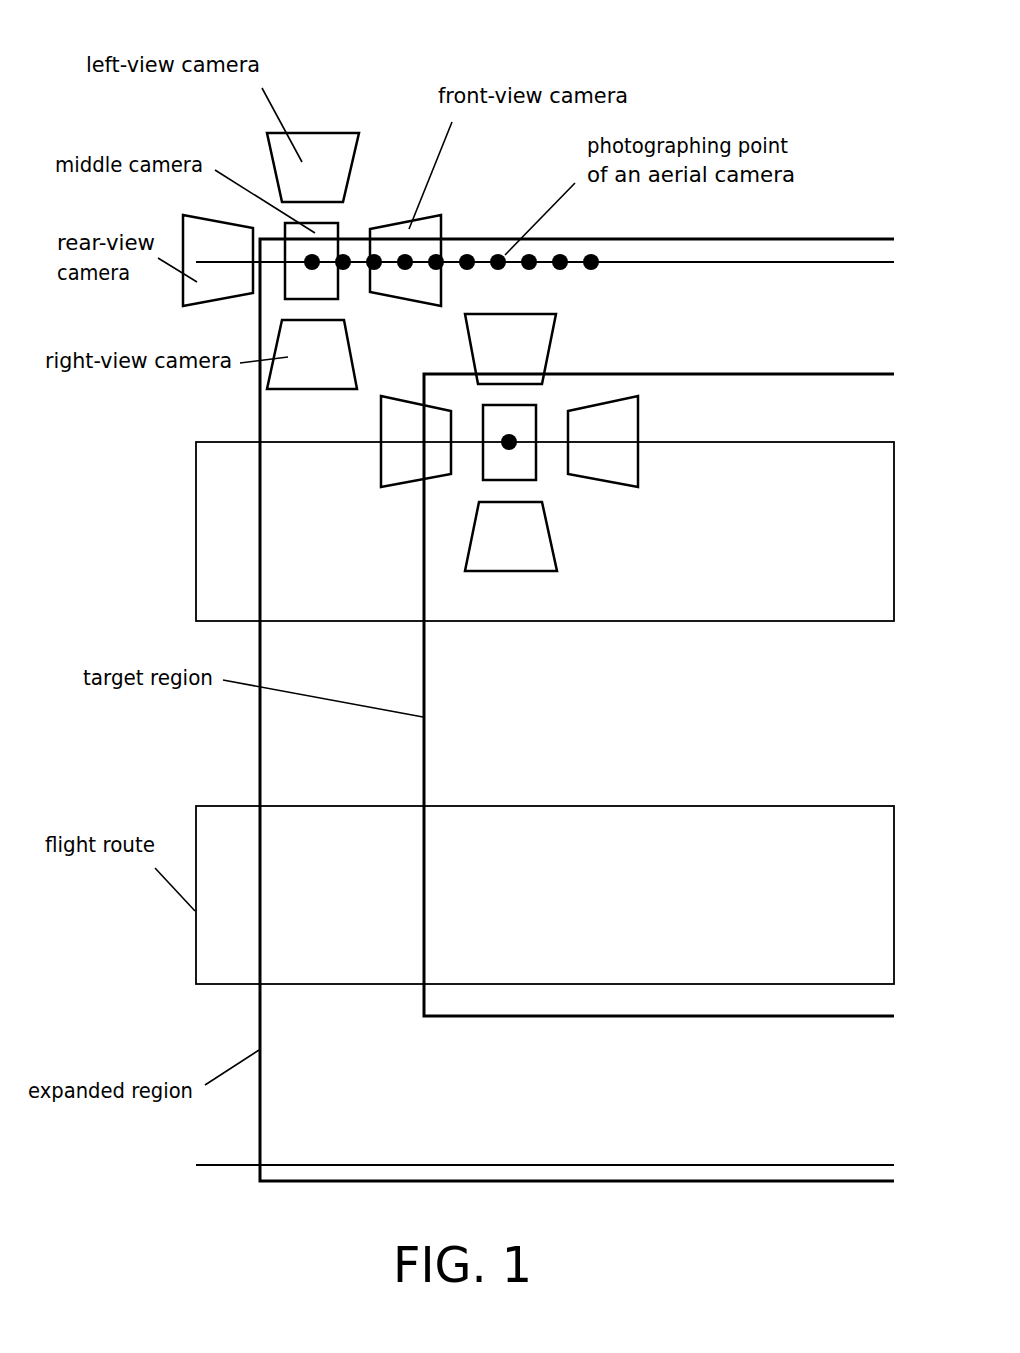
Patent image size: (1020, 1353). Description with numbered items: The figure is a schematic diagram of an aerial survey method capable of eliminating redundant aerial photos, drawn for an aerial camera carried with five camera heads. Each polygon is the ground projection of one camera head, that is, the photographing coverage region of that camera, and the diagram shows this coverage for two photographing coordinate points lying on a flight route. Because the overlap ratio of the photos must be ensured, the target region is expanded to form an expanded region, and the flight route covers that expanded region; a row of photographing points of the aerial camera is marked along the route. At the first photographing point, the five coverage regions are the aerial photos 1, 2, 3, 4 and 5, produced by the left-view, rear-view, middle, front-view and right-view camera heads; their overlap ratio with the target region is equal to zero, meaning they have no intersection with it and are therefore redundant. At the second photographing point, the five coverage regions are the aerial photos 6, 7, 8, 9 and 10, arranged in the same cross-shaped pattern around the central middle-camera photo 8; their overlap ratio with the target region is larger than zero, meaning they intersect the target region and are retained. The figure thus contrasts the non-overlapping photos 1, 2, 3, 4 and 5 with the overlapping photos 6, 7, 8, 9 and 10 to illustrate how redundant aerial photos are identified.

The aerial photo 1 is at (313, 167).
The aerial photo 2 is at (218, 260).
The aerial photo 3 is at (311, 261).
The aerial photo 4 is at (405, 260).
The aerial photo 5 is at (312, 354).
The aerial photo 6 is at (510, 349).
The aerial photo 7 is at (416, 441).
The aerial photo 8 is at (509, 445).
The aerial photo 9 is at (603, 441).
The aerial photo 10 is at (511, 536).